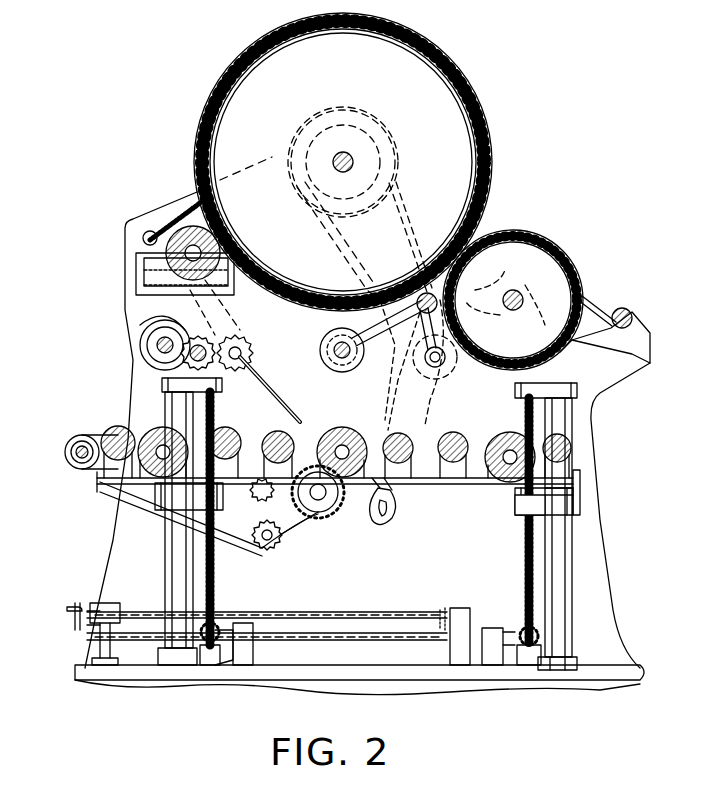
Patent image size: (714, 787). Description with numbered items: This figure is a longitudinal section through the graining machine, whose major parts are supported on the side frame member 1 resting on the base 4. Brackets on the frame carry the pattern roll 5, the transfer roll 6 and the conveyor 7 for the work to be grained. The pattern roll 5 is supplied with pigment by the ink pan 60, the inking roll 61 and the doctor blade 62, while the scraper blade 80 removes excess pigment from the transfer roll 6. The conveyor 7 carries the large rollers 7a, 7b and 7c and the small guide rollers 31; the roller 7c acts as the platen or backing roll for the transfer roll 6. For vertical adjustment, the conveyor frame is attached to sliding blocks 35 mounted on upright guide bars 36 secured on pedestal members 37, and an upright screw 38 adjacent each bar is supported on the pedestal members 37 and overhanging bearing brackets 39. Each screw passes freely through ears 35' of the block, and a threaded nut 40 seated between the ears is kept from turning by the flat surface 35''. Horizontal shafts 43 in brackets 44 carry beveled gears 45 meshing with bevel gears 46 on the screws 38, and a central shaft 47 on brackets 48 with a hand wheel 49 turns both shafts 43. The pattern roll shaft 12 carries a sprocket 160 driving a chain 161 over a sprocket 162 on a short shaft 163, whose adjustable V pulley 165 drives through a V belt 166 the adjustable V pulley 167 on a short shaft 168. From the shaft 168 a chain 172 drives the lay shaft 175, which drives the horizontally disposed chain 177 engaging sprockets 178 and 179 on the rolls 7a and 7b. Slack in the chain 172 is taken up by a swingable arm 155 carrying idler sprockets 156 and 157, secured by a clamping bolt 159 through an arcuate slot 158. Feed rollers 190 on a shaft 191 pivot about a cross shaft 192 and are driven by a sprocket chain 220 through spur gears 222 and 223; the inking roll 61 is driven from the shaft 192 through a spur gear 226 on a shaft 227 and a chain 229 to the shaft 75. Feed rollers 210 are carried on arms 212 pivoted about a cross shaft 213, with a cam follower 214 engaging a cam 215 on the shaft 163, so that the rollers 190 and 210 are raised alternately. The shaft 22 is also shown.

The side frame member 1 is at (590, 555).
The base 4 is at (605, 688).
The pattern roll 5 is at (405, 35).
The transfer roll 6 is at (535, 235).
The conveyor 7 is at (440, 478).
The large roller 7a is at (166, 428).
The large roller 7b is at (358, 432).
The large roller 7c is at (498, 436).
The pattern roll shaft 12 is at (350, 155).
The shaft 22 is at (513, 290).
The small rollers 31 is at (275, 428).
The sliding block 35 is at (388, 503).
The ears 35' is at (512, 513).
The flat surface 35'' is at (593, 487).
The upright guide bar 36 is at (172, 575).
The pedestal member 37 is at (578, 652).
The upright screw 38 is at (216, 572).
The overhanging bearing bracket 39 is at (542, 385).
The threaded nut 40 is at (206, 494).
The horizontal shaft 43 is at (403, 634).
The bracket 44 is at (252, 625).
The beveled gear 45 is at (214, 622).
The bevel gear 46 is at (210, 655).
The longitudinally extending shaft 47 is at (405, 612).
The bracket 48 is at (118, 625).
The hand wheel 49 is at (85, 600).
The ink pan 60 is at (146, 272).
The inking roll 61 is at (156, 258).
The doctor blade 62 is at (178, 210).
The shaft 75 is at (190, 240).
The scraper blade 80 is at (585, 298).
The swingable arm 155 is at (275, 548).
The idler sprocket 156 is at (258, 500).
The idler sprocket 157 is at (262, 552).
The arcuate slot 158 is at (390, 522).
The clamping bolt 159 is at (395, 506).
The sprocket 160 is at (332, 125).
The chain 161 is at (408, 190).
The sprocket 162 is at (405, 400).
The short shaft 163 is at (435, 365).
The adjustable V pulley 165 is at (382, 360).
The V belt 166 is at (440, 396).
The adjustable V pulley 167 is at (312, 520).
The short shaft 168 is at (330, 510).
The chain 172 is at (298, 540).
The lay shaft 175 is at (72, 440).
The horizontally disposed chain 177 is at (108, 430).
The sprocket 178 is at (150, 430).
The sprocket 179 is at (335, 428).
The feed rollers 190 is at (140, 345).
The shaft 191 is at (148, 352).
The cross shaft 192 is at (185, 360).
The feed rollers 210 is at (325, 335).
The arm 212 is at (340, 360).
The cross shaft 213 is at (420, 295).
The cam follower 214 is at (452, 340).
The cam 215 is at (450, 352).
The sprocket chain 220 is at (268, 388).
The spur gear 222 is at (196, 335).
The spur gear 223 is at (155, 318).
The spur gear 226 is at (250, 345).
The shaft 227 is at (245, 355).
The chain 229 is at (238, 305).